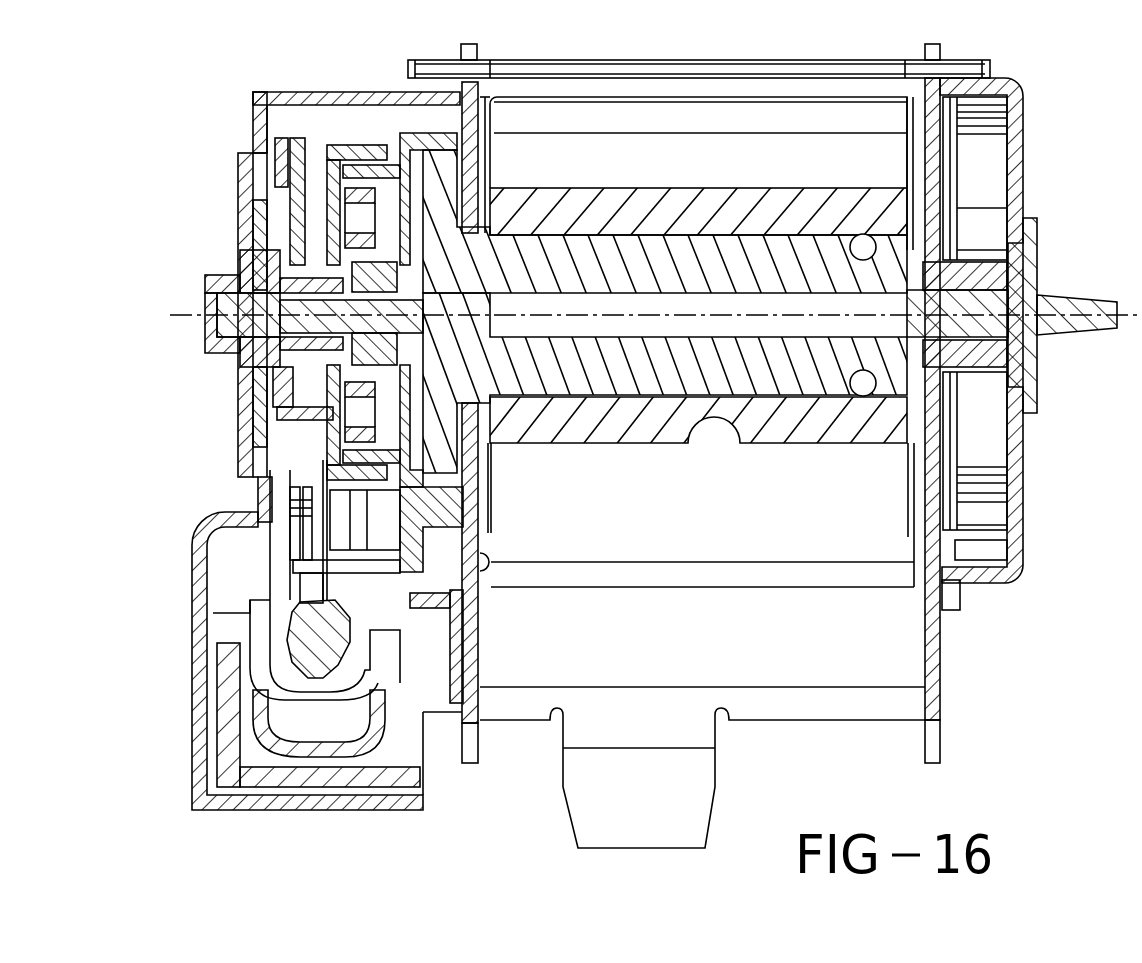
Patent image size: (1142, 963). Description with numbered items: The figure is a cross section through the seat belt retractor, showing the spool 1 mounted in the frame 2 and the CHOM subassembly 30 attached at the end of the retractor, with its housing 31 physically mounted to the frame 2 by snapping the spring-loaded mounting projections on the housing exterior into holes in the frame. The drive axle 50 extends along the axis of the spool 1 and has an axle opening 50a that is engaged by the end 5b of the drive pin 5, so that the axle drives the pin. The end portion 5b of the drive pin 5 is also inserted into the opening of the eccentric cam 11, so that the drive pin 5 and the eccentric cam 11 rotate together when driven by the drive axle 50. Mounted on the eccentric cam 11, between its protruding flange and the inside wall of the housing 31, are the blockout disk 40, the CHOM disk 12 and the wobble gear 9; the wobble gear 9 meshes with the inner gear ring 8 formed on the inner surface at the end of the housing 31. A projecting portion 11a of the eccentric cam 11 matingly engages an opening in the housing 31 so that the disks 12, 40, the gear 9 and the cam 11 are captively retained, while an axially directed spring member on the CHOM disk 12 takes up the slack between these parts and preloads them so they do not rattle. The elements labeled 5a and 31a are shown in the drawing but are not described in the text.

The spool 1 is at (775, 212).
The frame 2 is at (933, 688).
The drive pin 5 is at (307, 290).
The bearing inner race 5a is at (305, 372).
The end portion 5b is at (300, 344).
The inner gear ring 8 is at (258, 172).
The wobble gear 9 is at (258, 240).
The eccentric cam 11 is at (200, 300).
The projecting portion 11a is at (213, 325).
The CHOM disk 12 is at (283, 148).
The CHOM subassembly 30 is at (193, 750).
The housing 31 is at (282, 800).
The brush holder flange 31a is at (217, 296).
The blockout disk 40 is at (300, 165).
The drive axle 50 is at (378, 292).
The axle opening 50a is at (380, 362).